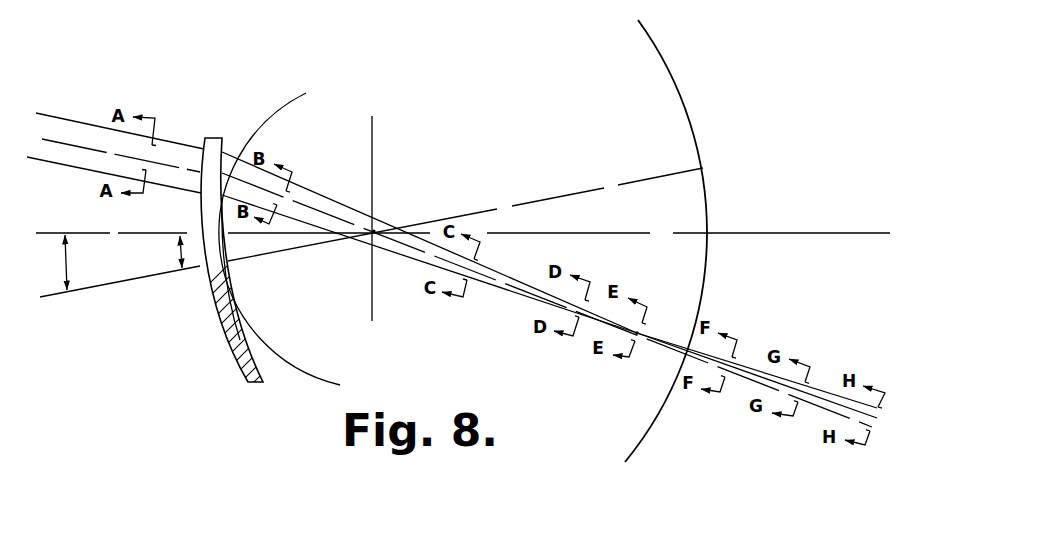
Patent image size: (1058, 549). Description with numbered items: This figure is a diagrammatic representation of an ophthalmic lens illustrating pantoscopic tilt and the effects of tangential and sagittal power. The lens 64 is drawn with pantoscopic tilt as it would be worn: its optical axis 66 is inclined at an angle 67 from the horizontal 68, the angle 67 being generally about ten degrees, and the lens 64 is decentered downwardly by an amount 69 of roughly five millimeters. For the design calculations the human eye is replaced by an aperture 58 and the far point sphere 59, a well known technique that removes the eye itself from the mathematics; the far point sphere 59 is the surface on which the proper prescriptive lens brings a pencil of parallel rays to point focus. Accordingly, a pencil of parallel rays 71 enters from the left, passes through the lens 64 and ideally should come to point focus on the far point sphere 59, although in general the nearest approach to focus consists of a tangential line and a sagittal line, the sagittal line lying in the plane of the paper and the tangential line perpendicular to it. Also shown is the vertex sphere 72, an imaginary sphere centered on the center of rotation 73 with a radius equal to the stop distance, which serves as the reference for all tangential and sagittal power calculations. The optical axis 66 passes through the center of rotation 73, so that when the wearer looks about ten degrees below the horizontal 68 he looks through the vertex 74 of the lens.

The aperture 58 is at (372, 207).
The far point sphere 59 is at (669, 73).
The lens 64 is at (213, 136).
The optical axis 66 is at (110, 284).
The angle 67 is at (68, 262).
The horizontal 68 is at (88, 233).
The amount of decentering 69 is at (180, 255).
The pencil of parallel rays 71 is at (80, 128).
The vertex sphere 72 is at (290, 106).
The center of rotation 73 is at (375, 230).
The vertex 74 is at (230, 263).